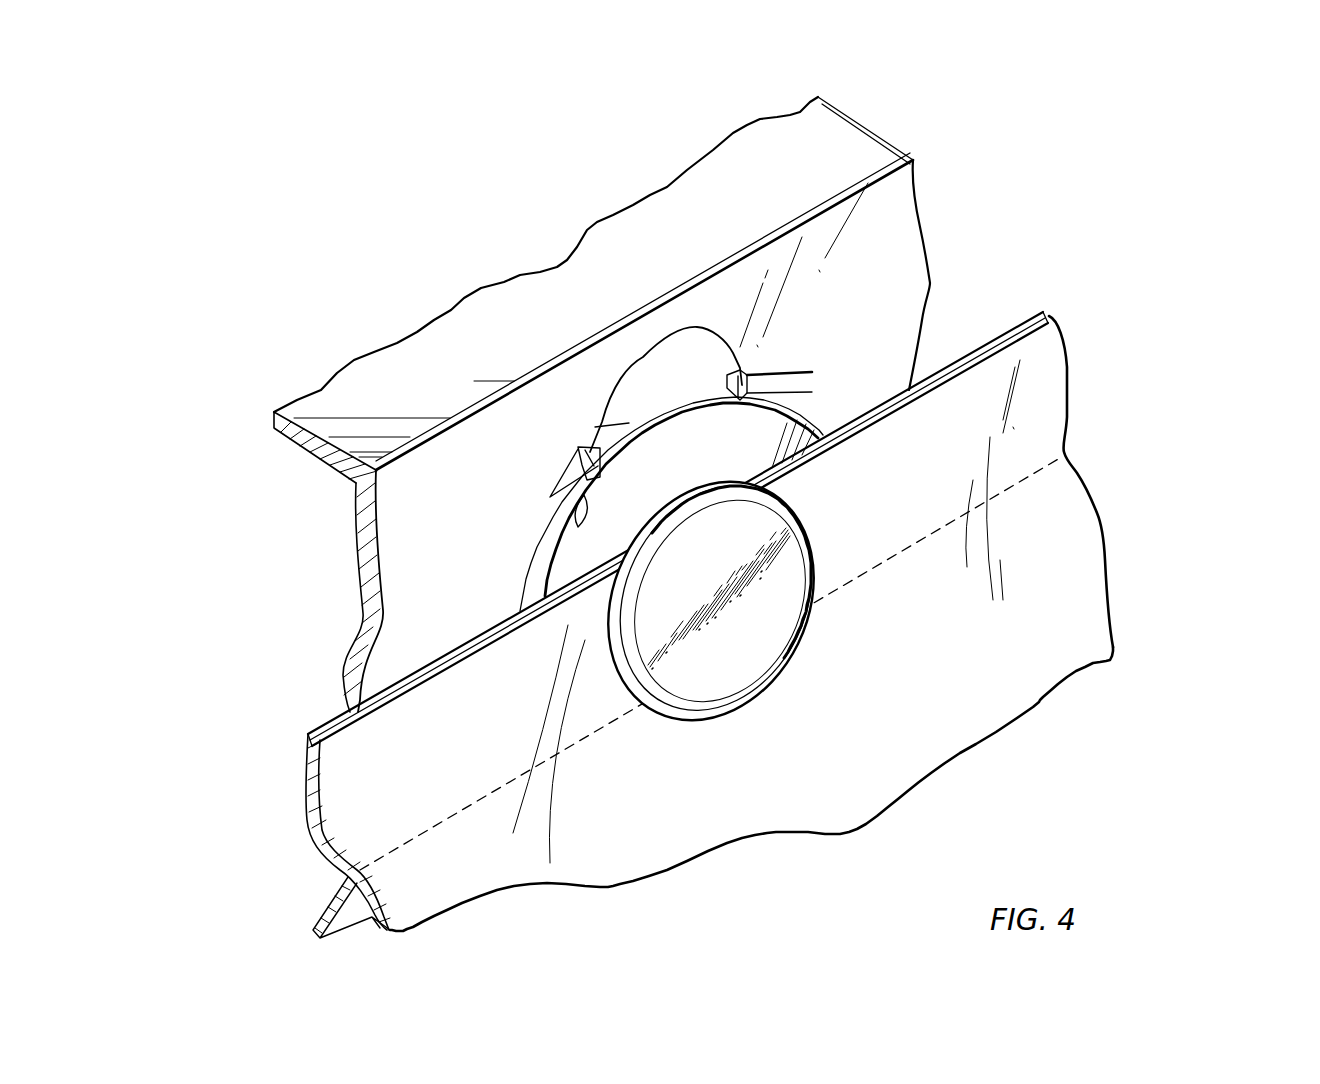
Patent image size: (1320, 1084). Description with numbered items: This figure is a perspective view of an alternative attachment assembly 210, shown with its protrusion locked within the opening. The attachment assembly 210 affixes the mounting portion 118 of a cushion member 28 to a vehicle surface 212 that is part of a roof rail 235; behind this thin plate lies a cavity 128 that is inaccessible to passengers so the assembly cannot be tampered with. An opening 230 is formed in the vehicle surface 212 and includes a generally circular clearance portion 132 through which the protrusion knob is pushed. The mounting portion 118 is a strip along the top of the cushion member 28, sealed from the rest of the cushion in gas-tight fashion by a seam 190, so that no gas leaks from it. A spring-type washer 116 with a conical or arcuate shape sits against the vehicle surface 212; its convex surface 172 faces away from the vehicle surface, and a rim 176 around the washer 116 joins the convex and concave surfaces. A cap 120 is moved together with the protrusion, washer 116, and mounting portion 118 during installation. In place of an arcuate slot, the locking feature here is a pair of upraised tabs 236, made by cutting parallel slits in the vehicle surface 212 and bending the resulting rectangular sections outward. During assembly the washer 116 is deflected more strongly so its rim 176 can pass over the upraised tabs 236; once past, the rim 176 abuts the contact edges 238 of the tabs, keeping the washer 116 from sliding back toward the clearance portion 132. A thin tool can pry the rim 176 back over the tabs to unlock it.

The cushion member 28 is at (322, 864).
The washer 116 is at (907, 384).
The mounting portion 118 is at (1079, 467).
The cap 120 is at (747, 650).
The cavity 128 is at (728, 402).
The clearance portion 132 is at (618, 398).
The convex surface 172 is at (750, 442).
The rim 176 is at (681, 406).
The seam 190 is at (603, 728).
The attachment assembly 210 is at (1132, 232).
The vehicle surface 212 is at (926, 228).
The opening 230 is at (681, 322).
The roof rail 235 is at (481, 270).
The upraised tabs 236 is at (766, 358).
The contact edges 238 is at (816, 423).